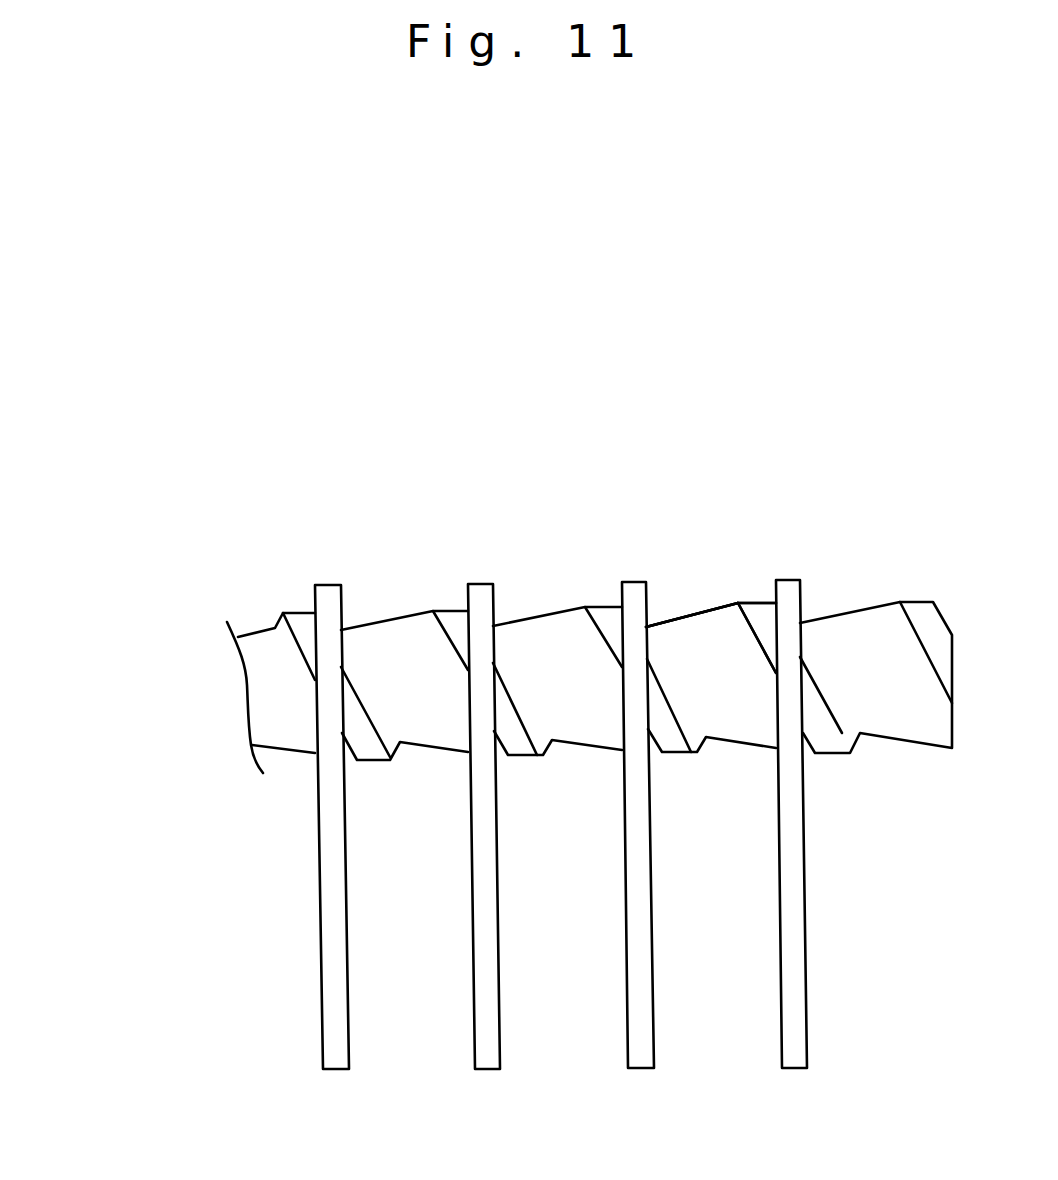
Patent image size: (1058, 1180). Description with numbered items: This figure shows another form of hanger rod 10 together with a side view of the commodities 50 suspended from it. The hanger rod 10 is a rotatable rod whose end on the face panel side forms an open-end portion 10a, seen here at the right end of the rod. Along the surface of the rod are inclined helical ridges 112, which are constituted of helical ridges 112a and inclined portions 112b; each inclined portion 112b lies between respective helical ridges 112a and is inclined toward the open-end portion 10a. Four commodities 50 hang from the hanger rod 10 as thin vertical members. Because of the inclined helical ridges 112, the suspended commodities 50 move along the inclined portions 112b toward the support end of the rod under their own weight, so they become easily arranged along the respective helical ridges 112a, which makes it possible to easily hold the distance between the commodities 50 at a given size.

The hanger rod 10 is at (270, 724).
The open-end portion 10a is at (863, 633).
The inclined helical ridges 112 is at (812, 478).
The helical ridges 112a is at (680, 613).
The inclined portions 112b is at (757, 607).
The commodities 50 is at (333, 1064).